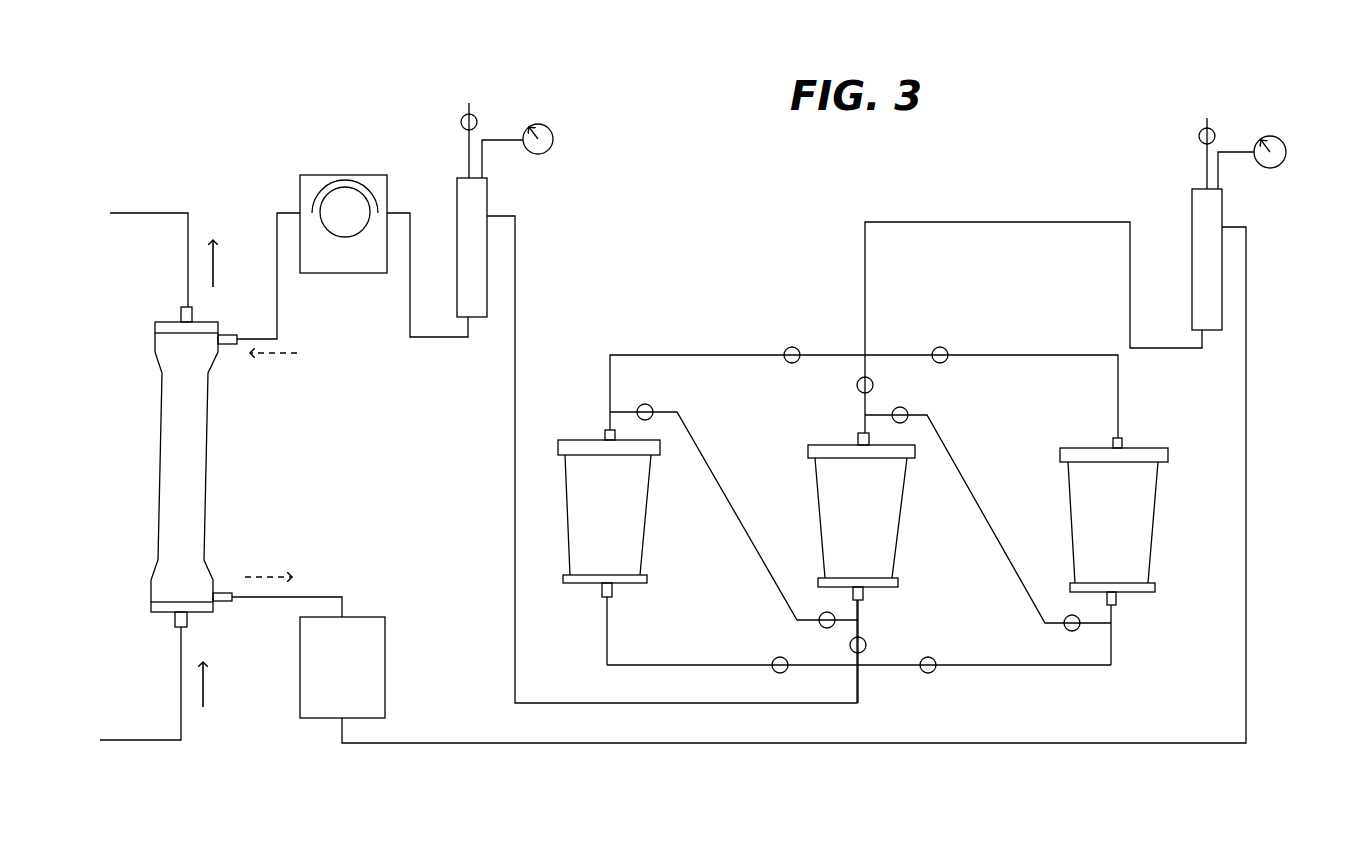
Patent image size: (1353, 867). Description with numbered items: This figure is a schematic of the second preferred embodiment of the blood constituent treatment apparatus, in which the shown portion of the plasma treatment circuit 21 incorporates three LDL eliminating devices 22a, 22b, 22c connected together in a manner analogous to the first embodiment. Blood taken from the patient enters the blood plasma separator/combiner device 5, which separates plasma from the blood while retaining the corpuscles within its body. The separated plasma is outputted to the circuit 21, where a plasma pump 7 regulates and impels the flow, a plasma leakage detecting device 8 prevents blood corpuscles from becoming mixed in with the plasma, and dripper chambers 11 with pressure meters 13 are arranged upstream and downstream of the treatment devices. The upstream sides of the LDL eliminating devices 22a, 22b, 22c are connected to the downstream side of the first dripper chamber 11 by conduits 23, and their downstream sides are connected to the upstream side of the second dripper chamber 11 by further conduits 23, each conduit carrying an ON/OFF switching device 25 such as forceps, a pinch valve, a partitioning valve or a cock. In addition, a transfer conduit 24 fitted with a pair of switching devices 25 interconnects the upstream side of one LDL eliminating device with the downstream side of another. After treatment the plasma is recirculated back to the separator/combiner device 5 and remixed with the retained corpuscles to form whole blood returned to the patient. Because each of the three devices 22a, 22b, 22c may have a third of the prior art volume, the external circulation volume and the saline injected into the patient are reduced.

The blood plasma separator/combiner device 5 is at (197, 488).
The plasma pump 7 is at (340, 175).
The plasma leakage detecting device 8 is at (378, 673).
The dripper chamber 11 is at (460, 281).
The pressure meter 13 is at (553, 137).
The blood plasma constituent treatment circuit 21 is at (380, 461).
The first LDL eliminating device 22a is at (637, 541).
The second LDL eliminating device 22b is at (895, 541).
The third LDL eliminating device 22c is at (1140, 550).
The conduit 23 is at (677, 355).
The transfer conduit 24 is at (737, 492).
The ON/OFF switching device 25 is at (653, 405).